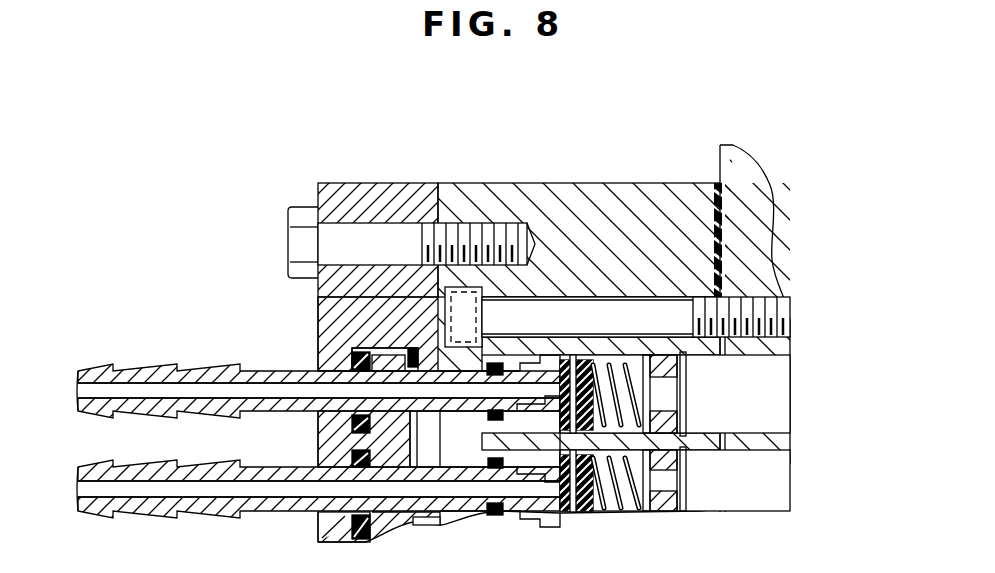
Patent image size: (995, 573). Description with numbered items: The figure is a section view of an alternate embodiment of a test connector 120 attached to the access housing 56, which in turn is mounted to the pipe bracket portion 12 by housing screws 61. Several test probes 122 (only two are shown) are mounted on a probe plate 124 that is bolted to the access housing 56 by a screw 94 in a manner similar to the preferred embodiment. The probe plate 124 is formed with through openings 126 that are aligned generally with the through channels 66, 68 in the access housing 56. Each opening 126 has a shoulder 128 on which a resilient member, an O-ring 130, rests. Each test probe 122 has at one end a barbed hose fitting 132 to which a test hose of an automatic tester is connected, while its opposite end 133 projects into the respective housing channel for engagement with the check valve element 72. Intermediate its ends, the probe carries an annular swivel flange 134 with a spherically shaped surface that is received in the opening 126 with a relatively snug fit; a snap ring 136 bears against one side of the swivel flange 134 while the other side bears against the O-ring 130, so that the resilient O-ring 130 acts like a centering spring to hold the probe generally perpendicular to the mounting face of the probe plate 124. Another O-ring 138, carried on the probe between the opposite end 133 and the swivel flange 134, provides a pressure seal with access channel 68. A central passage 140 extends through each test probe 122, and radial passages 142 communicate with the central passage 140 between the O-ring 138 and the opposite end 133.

The pipe bracket portion 12 is at (774, 160).
The access housing 56 is at (619, 178).
The housing screw 61 is at (765, 310).
The housing channel 66 is at (716, 493).
The housing channel 68 is at (716, 403).
The valve element 72 is at (580, 506).
The screw 94 is at (300, 218).
The test connector 120 is at (375, 176).
The test probe 122 is at (300, 412).
The probe plate 124 is at (325, 326).
The through opening 126 is at (412, 354).
The shoulder 128 is at (335, 450).
The O-ring 130 is at (348, 371).
The barbed hose fitting 132 is at (132, 371).
The opposite end 133 is at (540, 362).
The annular swivel flange 134 is at (364, 354).
The snap ring 136 is at (440, 424).
The O-ring 138 is at (496, 504).
The central passage 140 is at (147, 498).
The radial passage 142 is at (556, 506).